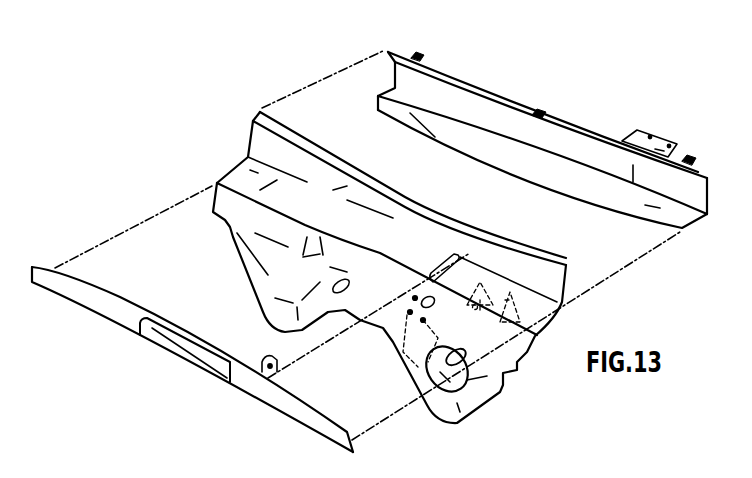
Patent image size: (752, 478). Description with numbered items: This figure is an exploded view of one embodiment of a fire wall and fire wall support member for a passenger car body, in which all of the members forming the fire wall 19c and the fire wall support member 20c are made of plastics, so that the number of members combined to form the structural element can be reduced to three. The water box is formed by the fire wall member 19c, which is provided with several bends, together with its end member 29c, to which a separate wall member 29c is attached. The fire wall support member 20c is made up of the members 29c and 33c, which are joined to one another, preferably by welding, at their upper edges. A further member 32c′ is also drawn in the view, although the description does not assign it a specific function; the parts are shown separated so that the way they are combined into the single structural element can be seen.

The fire wall member 19c is at (228, 230).
The fire wall support member 20c is at (456, 214).
The end member 29c is at (262, 144).
The upper flange 32c′ is at (383, 187).
The member 33c is at (436, 90).